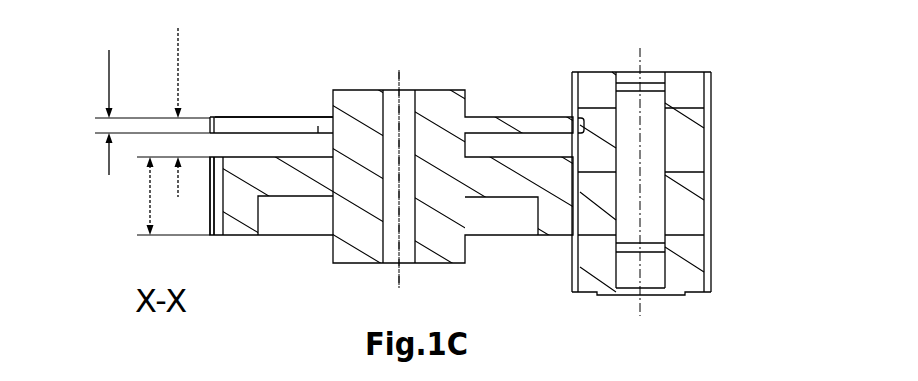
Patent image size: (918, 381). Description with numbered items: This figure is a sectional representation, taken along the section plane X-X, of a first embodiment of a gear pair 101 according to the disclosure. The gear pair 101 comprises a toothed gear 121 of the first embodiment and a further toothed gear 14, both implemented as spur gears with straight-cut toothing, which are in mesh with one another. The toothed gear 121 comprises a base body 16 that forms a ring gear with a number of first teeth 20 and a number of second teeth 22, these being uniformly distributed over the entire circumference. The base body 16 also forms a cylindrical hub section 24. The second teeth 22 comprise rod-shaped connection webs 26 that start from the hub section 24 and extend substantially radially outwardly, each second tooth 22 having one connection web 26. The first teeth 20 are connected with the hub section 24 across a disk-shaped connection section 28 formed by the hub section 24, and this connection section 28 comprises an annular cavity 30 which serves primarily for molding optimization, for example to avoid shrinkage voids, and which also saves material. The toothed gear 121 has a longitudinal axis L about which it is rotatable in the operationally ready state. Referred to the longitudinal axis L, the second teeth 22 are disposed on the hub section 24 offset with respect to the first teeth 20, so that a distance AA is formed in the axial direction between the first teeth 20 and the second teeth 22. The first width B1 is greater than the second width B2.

The gear pair 101 is at (765, 81).
The toothed gear 121 is at (314, 71).
The further toothed gear 14 is at (702, 183).
The base body 16 is at (367, 201).
The first teeth 20 is at (218, 237).
The second teeth 22 is at (210, 117).
The hub section 24 is at (435, 242).
The connection webs 26 is at (253, 123).
The connection section 28 is at (290, 180).
The annular cavity 30 is at (505, 215).
The longitudinal axis L is at (398, 83).
The first width B1 is at (161, 196).
The second width B2 is at (136, 112).
The distance AA is at (161, 112).